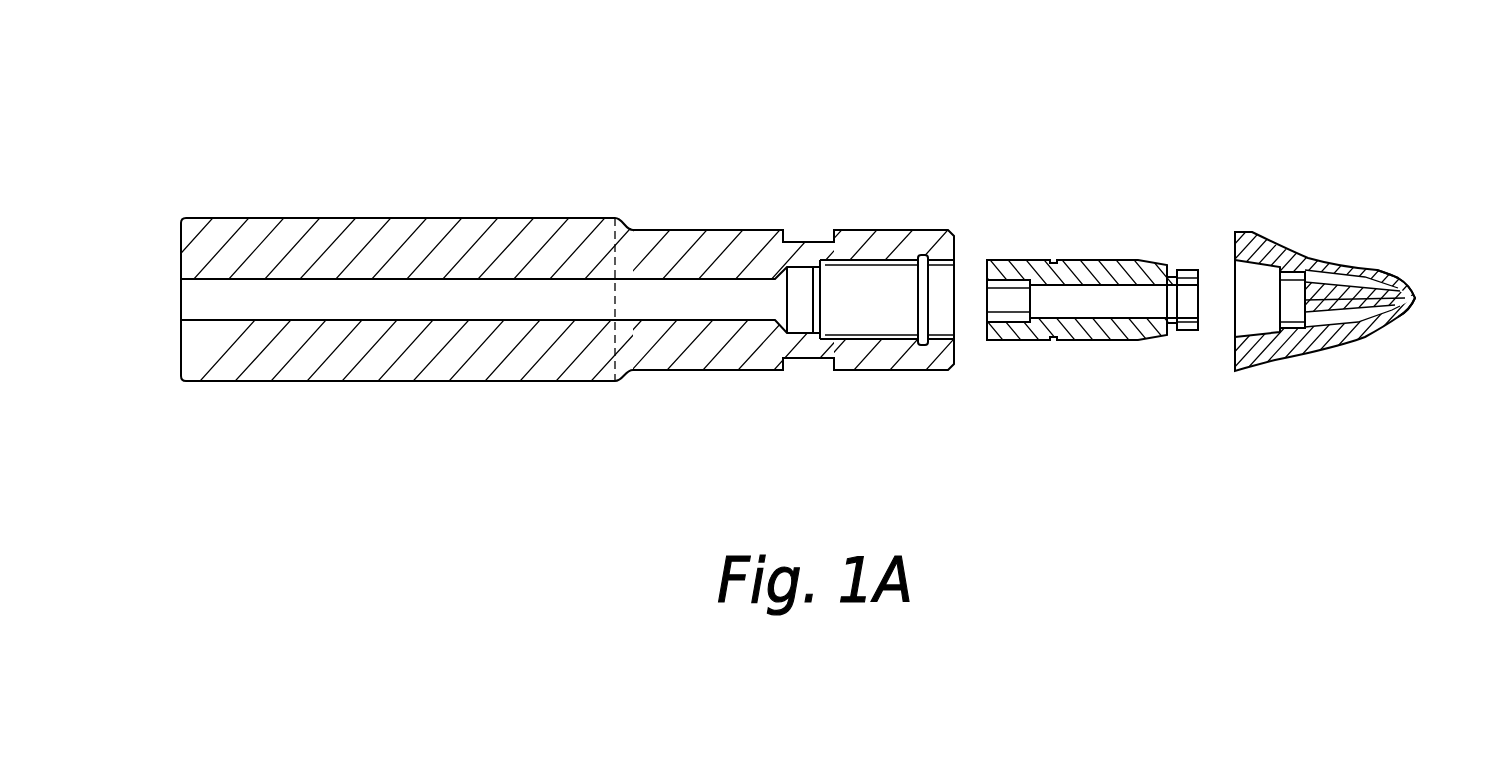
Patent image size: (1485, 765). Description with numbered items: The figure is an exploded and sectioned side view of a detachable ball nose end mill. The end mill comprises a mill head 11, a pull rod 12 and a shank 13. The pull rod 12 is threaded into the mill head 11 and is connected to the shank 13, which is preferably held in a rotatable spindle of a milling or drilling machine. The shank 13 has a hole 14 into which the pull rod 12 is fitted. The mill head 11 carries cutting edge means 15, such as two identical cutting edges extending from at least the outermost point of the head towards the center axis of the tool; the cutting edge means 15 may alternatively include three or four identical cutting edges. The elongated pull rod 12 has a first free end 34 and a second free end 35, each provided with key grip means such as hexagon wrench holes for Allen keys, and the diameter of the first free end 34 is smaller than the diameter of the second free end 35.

The mill head 11 is at (1291, 235).
The pull rod 12 is at (1086, 299).
The shank 13 is at (573, 216).
The hole 14 is at (876, 287).
The cutting edge means 15 is at (1388, 265).
The first free end 34 is at (1193, 370).
The second free end 35 is at (1024, 380).